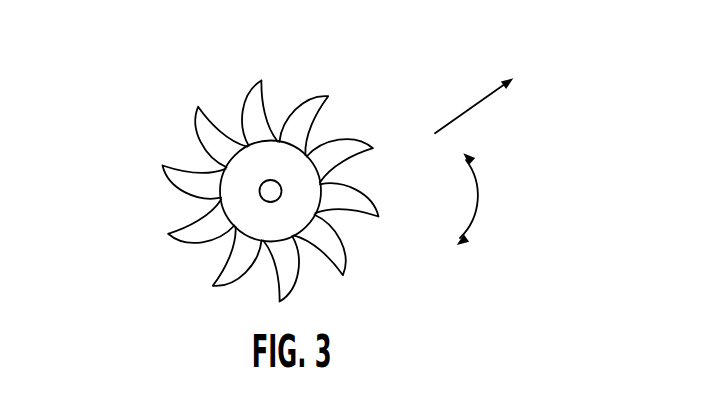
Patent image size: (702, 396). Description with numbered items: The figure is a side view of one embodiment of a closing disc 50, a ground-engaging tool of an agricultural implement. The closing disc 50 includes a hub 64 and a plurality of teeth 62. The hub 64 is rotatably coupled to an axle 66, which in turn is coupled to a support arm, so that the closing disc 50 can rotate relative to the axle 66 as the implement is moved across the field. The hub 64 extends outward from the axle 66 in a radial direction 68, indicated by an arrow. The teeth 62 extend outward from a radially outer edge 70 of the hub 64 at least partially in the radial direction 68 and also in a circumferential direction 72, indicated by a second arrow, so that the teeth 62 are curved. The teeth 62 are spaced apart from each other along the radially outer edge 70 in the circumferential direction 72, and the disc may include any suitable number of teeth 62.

The closing disc 50 is at (160, 70).
The teeth 62 is at (337, 140).
The hub 64 is at (232, 182).
The axle 66 is at (278, 183).
The radial direction 68 is at (457, 118).
The radially outer edge 70 is at (244, 142).
The circumferential direction 72 is at (483, 197).